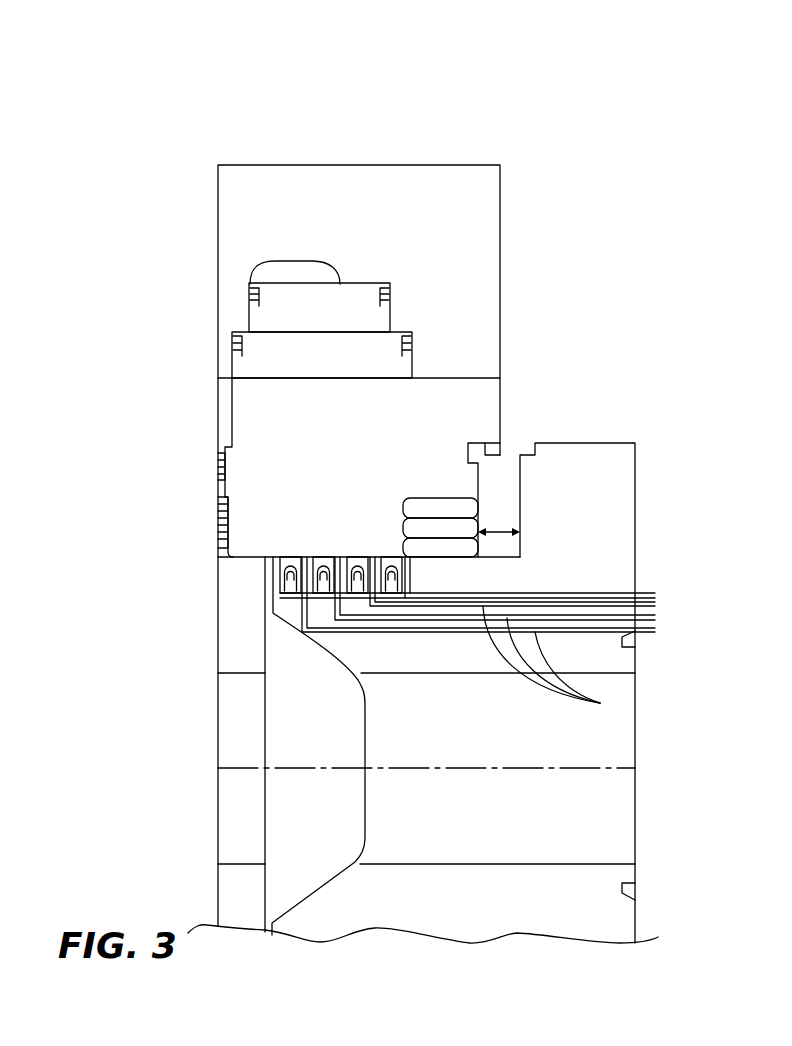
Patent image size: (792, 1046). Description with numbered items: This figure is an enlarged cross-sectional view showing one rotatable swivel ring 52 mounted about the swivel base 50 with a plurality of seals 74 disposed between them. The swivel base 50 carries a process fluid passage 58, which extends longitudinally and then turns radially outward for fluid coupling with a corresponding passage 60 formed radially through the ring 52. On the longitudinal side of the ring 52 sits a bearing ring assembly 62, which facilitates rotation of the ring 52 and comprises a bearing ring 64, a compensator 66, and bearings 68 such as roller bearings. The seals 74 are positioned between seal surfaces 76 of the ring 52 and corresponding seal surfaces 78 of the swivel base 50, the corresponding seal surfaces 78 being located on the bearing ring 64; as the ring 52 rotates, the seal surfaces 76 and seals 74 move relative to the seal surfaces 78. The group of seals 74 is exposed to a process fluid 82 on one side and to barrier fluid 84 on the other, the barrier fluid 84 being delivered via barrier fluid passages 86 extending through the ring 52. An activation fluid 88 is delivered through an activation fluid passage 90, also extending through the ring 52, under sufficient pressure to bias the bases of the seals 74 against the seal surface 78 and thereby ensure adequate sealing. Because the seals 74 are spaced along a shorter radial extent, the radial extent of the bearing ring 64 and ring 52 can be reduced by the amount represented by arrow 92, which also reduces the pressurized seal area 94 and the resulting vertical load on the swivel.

The swivel base 50 is at (336, 145).
The swivel ring 52 is at (637, 466).
The process fluid passage 58 is at (240, 863).
The passage 60 is at (580, 864).
The bearing ring assembly 62 is at (216, 500).
The bearing ring 64 is at (398, 426).
The compensator 66 is at (396, 316).
The bearing 68 is at (482, 495).
The seal 74 is at (410, 573).
The seal surface 76 is at (277, 557).
The corresponding seal surface 78 is at (277, 558).
The process fluid 82 is at (278, 628).
The barrier fluid 84 is at (655, 631).
The barrier fluid passage 86 is at (600, 703).
The activation fluid 88 is at (655, 595).
The activation fluid passage 90 is at (568, 591).
The arrow 92 is at (500, 532).
The pressurized seal area 94 is at (397, 553).